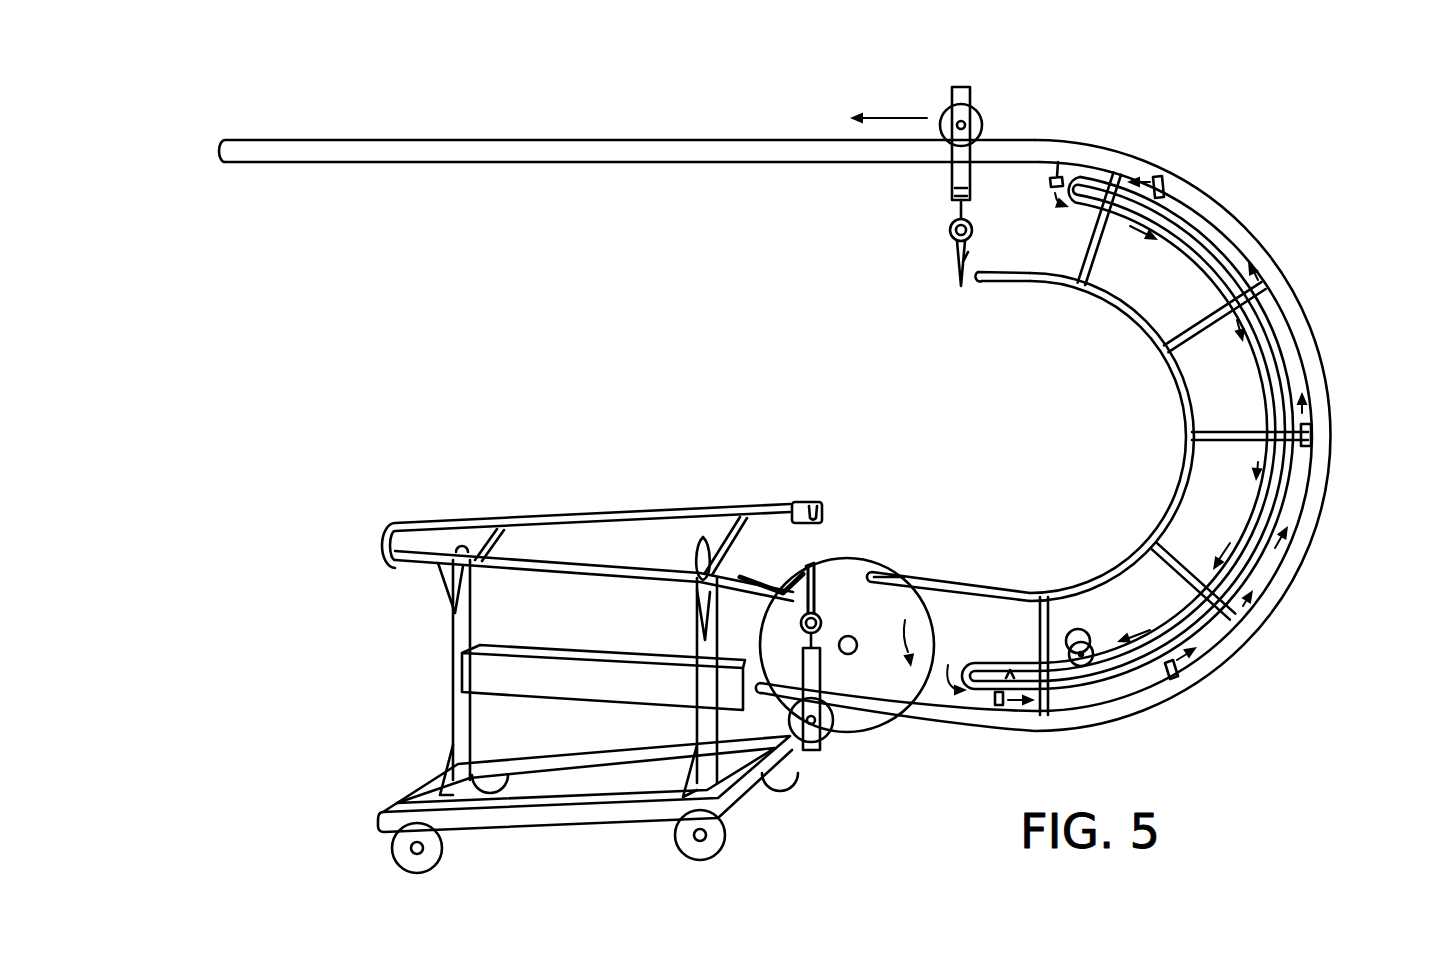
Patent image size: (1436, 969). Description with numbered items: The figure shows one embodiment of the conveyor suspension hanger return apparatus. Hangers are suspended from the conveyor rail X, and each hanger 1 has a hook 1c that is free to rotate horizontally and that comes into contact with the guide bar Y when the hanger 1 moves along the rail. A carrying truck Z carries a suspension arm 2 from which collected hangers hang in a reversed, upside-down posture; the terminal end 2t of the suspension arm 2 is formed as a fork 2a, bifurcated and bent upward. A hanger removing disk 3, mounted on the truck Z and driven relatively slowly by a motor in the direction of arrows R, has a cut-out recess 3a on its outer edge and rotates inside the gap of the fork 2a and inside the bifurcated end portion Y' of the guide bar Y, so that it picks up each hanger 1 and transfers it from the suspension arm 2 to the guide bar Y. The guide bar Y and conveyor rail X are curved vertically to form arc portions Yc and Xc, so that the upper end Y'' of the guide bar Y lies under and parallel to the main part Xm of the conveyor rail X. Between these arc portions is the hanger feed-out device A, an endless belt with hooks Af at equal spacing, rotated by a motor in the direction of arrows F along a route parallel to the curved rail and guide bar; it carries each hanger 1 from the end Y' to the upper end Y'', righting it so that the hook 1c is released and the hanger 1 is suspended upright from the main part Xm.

The conveyor rail X is at (806, 396).
The main part of the conveyor rail Xm is at (640, 145).
The arc portion of the conveyor rail Xc is at (1332, 400).
The hanger 1 is at (885, 406).
The hook 1c is at (958, 282).
The hooks Af is at (1068, 180).
The arrows F is at (1142, 235).
The guide bar Y is at (1030, 436).
The arc portion of the guide bar Yc is at (1190, 396).
The upper end of the guide bar Y'' is at (1002, 299).
The end portion of the guide bar Y' is at (948, 544).
The hanger feed-out device A is at (1253, 516).
The arrows R is at (936, 622).
The hanger removing disk 3 is at (869, 593).
The cut-out recess 3a is at (815, 562).
The suspension arm 2 is at (602, 525).
The fork 2a is at (762, 578).
The terminal end of the suspension arm 2t is at (700, 545).
The carrying truck Z is at (565, 655).